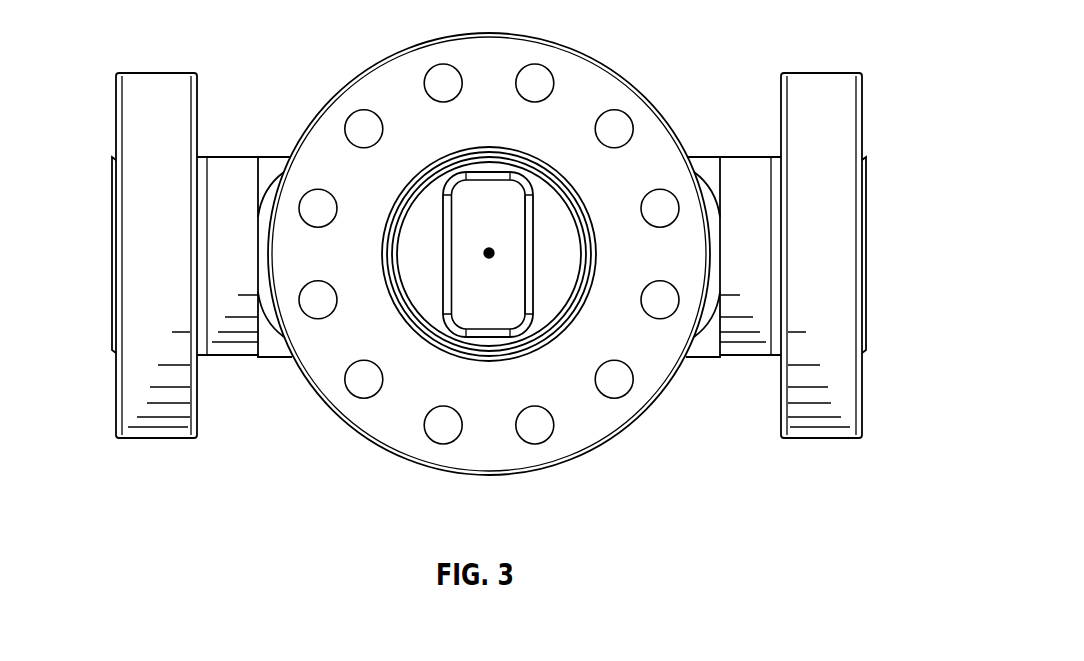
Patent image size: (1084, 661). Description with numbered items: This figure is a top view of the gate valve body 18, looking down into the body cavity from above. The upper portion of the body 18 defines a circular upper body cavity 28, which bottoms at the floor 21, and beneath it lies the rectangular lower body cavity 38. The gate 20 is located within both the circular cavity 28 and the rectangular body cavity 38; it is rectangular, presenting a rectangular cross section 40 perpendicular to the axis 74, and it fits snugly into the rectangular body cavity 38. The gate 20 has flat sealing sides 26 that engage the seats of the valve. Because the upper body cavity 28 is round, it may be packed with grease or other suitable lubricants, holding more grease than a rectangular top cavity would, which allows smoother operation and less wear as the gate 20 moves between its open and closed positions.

The valve body 18 is at (272, 157).
The gate 20 is at (465, 305).
The floor 21 is at (418, 262).
The flat sealing sides 26 is at (527, 290).
The upper body cavity 28 is at (560, 238).
The lower body cavity 38 is at (528, 217).
The rectangular cross section 40 is at (507, 205).
The axis 74 is at (486, 255).